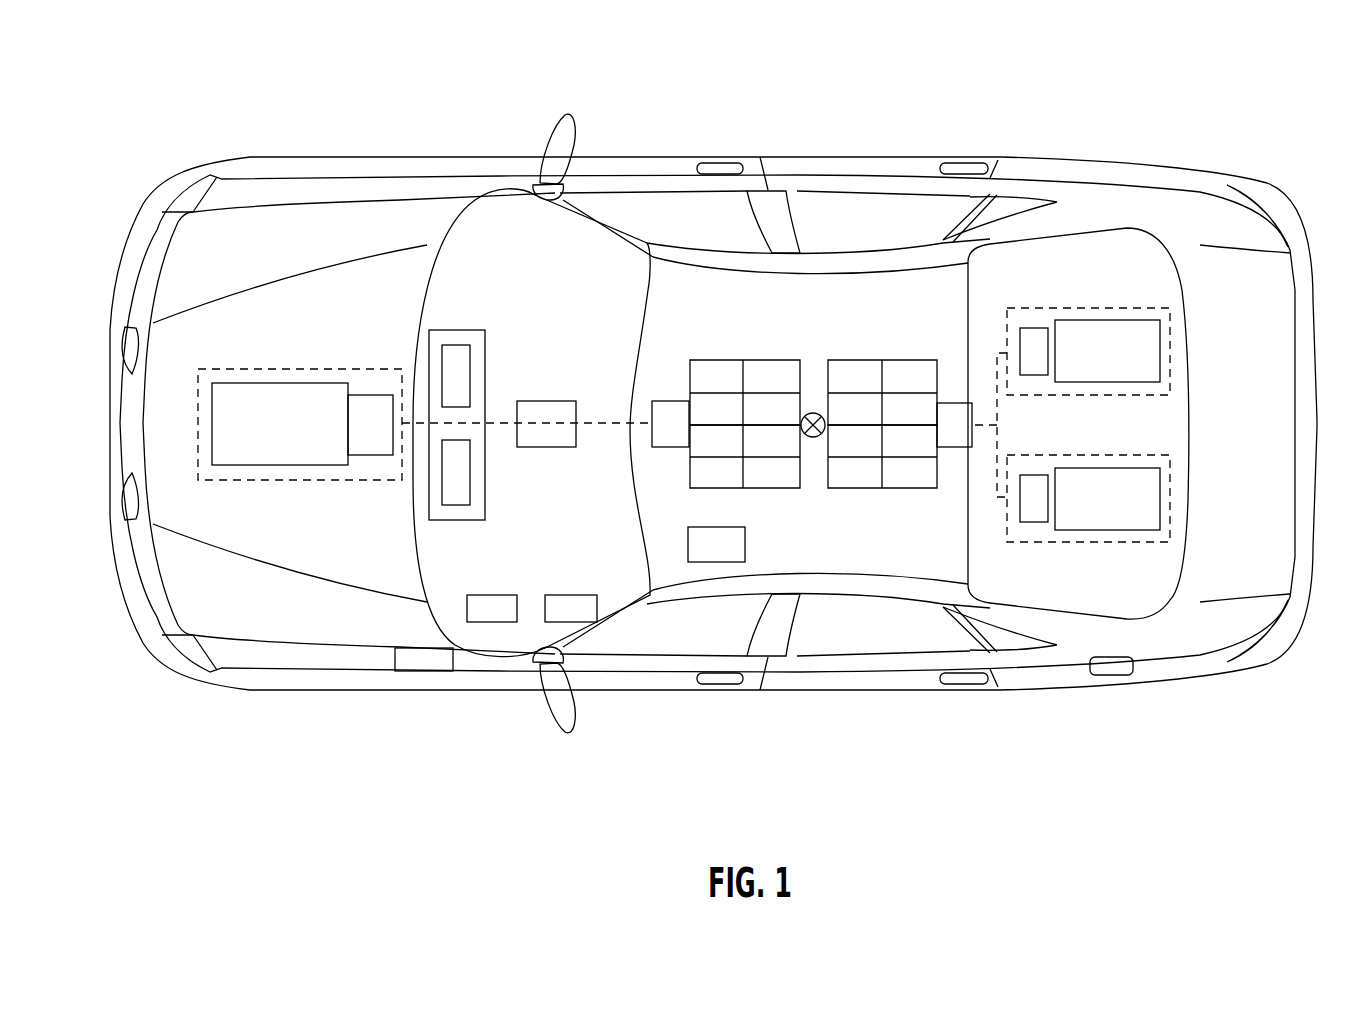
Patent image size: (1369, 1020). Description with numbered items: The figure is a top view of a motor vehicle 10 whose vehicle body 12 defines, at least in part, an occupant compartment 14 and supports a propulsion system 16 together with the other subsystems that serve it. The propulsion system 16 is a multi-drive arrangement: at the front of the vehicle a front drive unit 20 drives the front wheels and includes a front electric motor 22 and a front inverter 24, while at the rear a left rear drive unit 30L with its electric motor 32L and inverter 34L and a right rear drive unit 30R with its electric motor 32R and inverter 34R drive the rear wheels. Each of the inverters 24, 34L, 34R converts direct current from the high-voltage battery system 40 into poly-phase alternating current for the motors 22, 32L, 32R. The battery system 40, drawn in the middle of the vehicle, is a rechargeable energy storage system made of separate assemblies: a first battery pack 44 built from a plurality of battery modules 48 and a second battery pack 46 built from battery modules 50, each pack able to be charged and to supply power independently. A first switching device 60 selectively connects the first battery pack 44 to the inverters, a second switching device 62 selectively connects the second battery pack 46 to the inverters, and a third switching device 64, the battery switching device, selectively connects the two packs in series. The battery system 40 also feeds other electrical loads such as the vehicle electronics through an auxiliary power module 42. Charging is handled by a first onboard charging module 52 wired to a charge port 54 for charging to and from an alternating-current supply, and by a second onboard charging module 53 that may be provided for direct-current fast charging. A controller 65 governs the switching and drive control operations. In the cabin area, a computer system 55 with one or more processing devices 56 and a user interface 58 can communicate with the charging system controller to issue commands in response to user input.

The motor vehicle 10 is at (156, 82).
The vehicle body 12 is at (772, 144).
The occupant compartment 14 is at (838, 585).
The propulsion system 16 is at (266, 547).
The front drive unit 20 is at (250, 368).
The front electric motor 22 is at (322, 383).
The front inverter 24 is at (372, 455).
The right rear drive unit 30R is at (1173, 332).
The left rear drive unit 30L is at (1173, 497).
The electric motor 32R is at (1105, 320).
The electric motor 32L is at (1103, 530).
The inverter 34R is at (1030, 328).
The inverter 34L is at (1037, 523).
The battery system 40 is at (739, 325).
The auxiliary power module 42 is at (707, 527).
The first battery pack 44 is at (777, 490).
The second battery pack 46 is at (855, 490).
The battery modules 48 is at (770, 386).
The battery modules 50 is at (842, 372).
The first onboard charging module 52 is at (568, 595).
The second onboard charging module 53 is at (491, 595).
The charge port 54 is at (421, 648).
The computer system 55 is at (452, 291).
The processing devices 56 is at (472, 357).
The user interface 58 is at (472, 487).
The first switching device 60 is at (672, 400).
The second switching device 62 is at (960, 400).
The third switching device 64 is at (815, 440).
The controller 65 is at (545, 400).